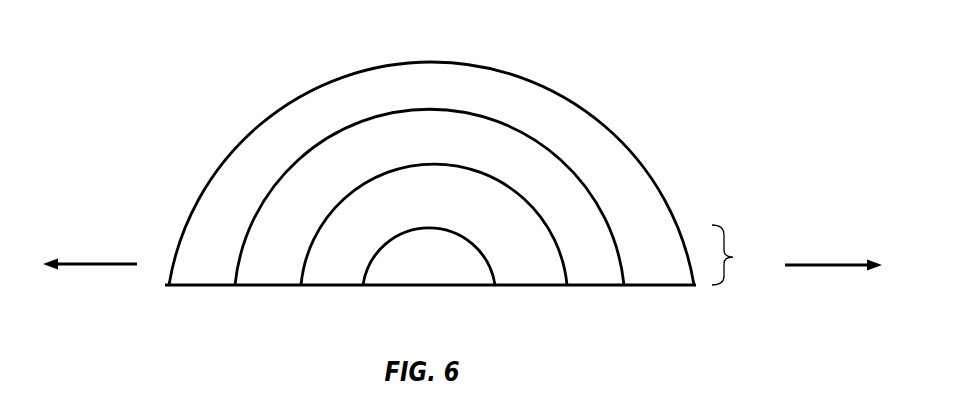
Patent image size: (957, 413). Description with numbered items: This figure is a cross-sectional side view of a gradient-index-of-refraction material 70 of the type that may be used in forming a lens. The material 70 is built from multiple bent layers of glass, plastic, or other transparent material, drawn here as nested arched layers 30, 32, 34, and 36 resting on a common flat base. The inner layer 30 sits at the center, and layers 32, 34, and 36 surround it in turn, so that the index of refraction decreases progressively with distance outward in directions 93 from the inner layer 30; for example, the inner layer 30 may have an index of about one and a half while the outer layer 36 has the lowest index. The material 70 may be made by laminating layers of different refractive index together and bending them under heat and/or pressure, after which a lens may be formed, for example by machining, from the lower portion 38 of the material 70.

The gradient-index-of-refraction material 70 is at (641, 80).
The layer 36 is at (209, 270).
The layer 34 is at (272, 270).
The layer 32 is at (340, 270).
The inner layer 30 is at (426, 270).
The lower portion 38 is at (735, 255).
The directions 93 is at (90, 266).